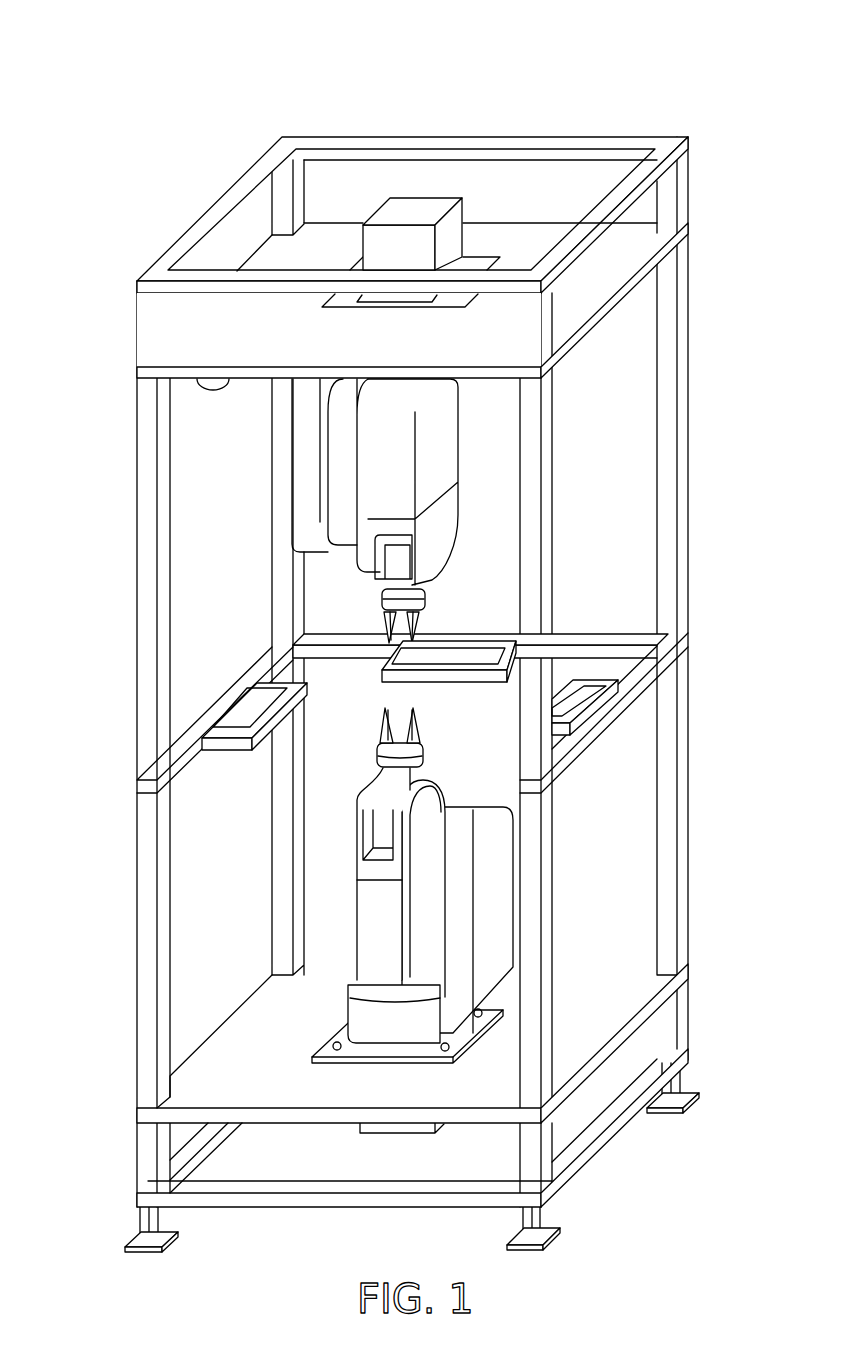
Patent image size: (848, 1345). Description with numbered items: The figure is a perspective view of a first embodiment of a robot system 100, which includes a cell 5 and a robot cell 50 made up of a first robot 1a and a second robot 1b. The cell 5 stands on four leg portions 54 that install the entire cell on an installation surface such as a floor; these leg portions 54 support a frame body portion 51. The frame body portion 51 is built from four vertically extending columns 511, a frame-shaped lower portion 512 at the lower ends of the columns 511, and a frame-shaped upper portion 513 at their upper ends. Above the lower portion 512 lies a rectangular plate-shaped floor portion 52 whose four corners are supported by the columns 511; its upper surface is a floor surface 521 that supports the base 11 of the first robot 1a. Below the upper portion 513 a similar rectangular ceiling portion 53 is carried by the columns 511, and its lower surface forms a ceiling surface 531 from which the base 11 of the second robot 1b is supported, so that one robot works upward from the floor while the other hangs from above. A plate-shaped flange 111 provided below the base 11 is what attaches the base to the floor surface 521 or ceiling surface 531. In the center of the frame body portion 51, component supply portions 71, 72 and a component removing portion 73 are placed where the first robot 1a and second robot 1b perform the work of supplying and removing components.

The robot system 100 is at (724, 67).
The robot cell 50 is at (707, 122).
The cell 5 is at (690, 180).
The frame body portion 51 is at (558, 133).
The column 511 is at (680, 438).
The lower portion 512 is at (602, 1122).
The upper portion 513 is at (464, 143).
The floor portion 52 is at (617, 1010).
The floor surface 521 is at (253, 1085).
The ceiling portion 53 is at (603, 290).
The ceiling surface 531 is at (200, 385).
The leg portion 54 is at (140, 1222).
The first robot 1a is at (353, 833).
The second robot 1b is at (278, 493).
The base 11 is at (407, 205).
The flange 111 is at (430, 1047).
The component supply portion 71 is at (250, 710).
The component supply portion 72 is at (480, 643).
The component removing portion 73 is at (577, 700).